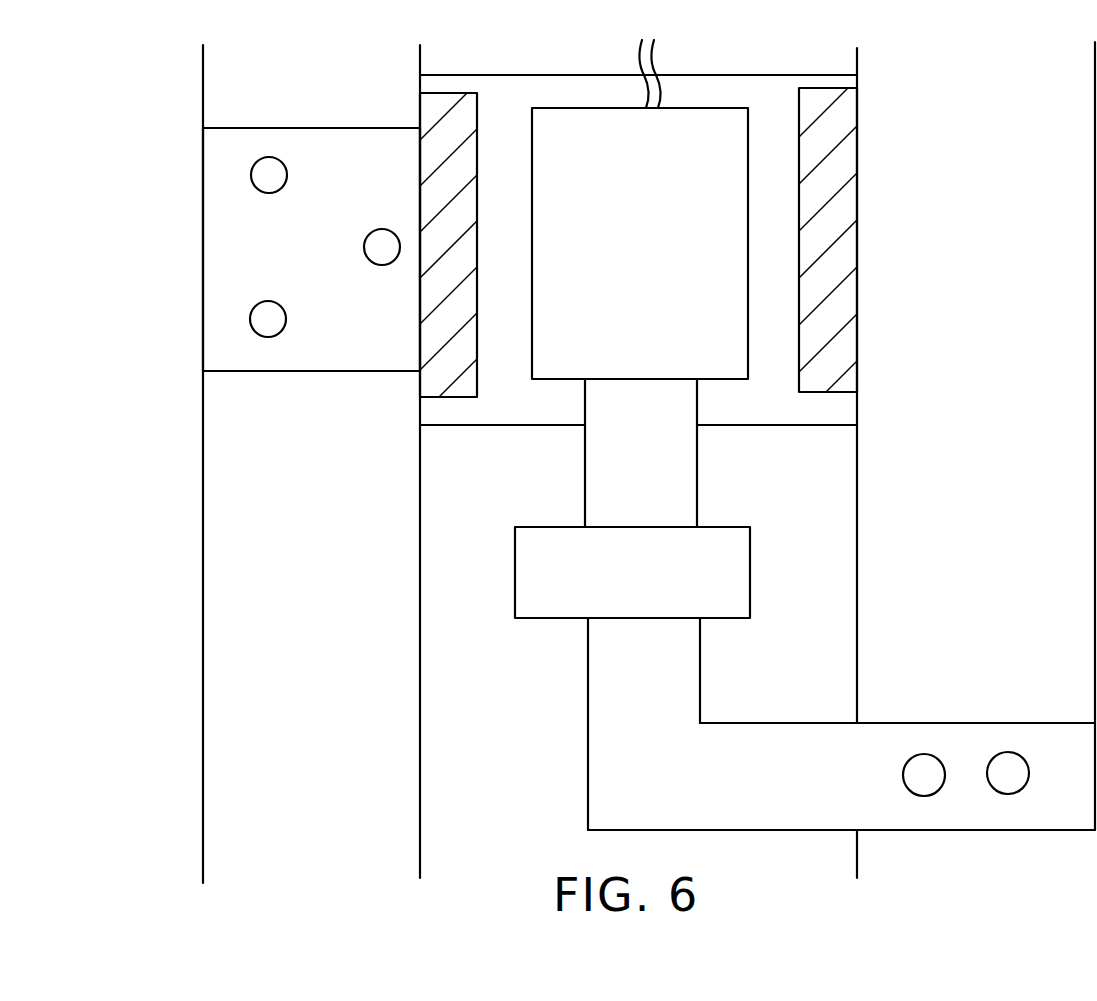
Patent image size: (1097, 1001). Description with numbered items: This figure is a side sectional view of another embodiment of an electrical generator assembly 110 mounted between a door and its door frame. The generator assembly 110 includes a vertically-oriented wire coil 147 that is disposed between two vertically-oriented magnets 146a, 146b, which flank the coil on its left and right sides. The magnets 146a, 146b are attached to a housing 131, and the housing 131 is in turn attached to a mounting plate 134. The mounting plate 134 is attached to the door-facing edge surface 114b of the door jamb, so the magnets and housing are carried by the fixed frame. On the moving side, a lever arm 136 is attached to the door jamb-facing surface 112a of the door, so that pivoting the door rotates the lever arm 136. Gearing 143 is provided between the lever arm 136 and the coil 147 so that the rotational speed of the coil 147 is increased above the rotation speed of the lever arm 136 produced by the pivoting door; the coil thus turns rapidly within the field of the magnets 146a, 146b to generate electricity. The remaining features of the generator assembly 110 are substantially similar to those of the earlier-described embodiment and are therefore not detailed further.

The generator assembly 110 is at (178, 632).
The door-facing edge surface of a door jamb 114b is at (365, 673).
The door jamb-facing surface of a door 112a is at (1025, 510).
The mounting plate 134 is at (307, 271).
The magnet 146a is at (440, 380).
The magnet 146b is at (845, 297).
The wire coil 147 is at (670, 326).
The housing 131 is at (747, 426).
The gearing 143 is at (552, 622).
The lever arm 136 is at (973, 747).